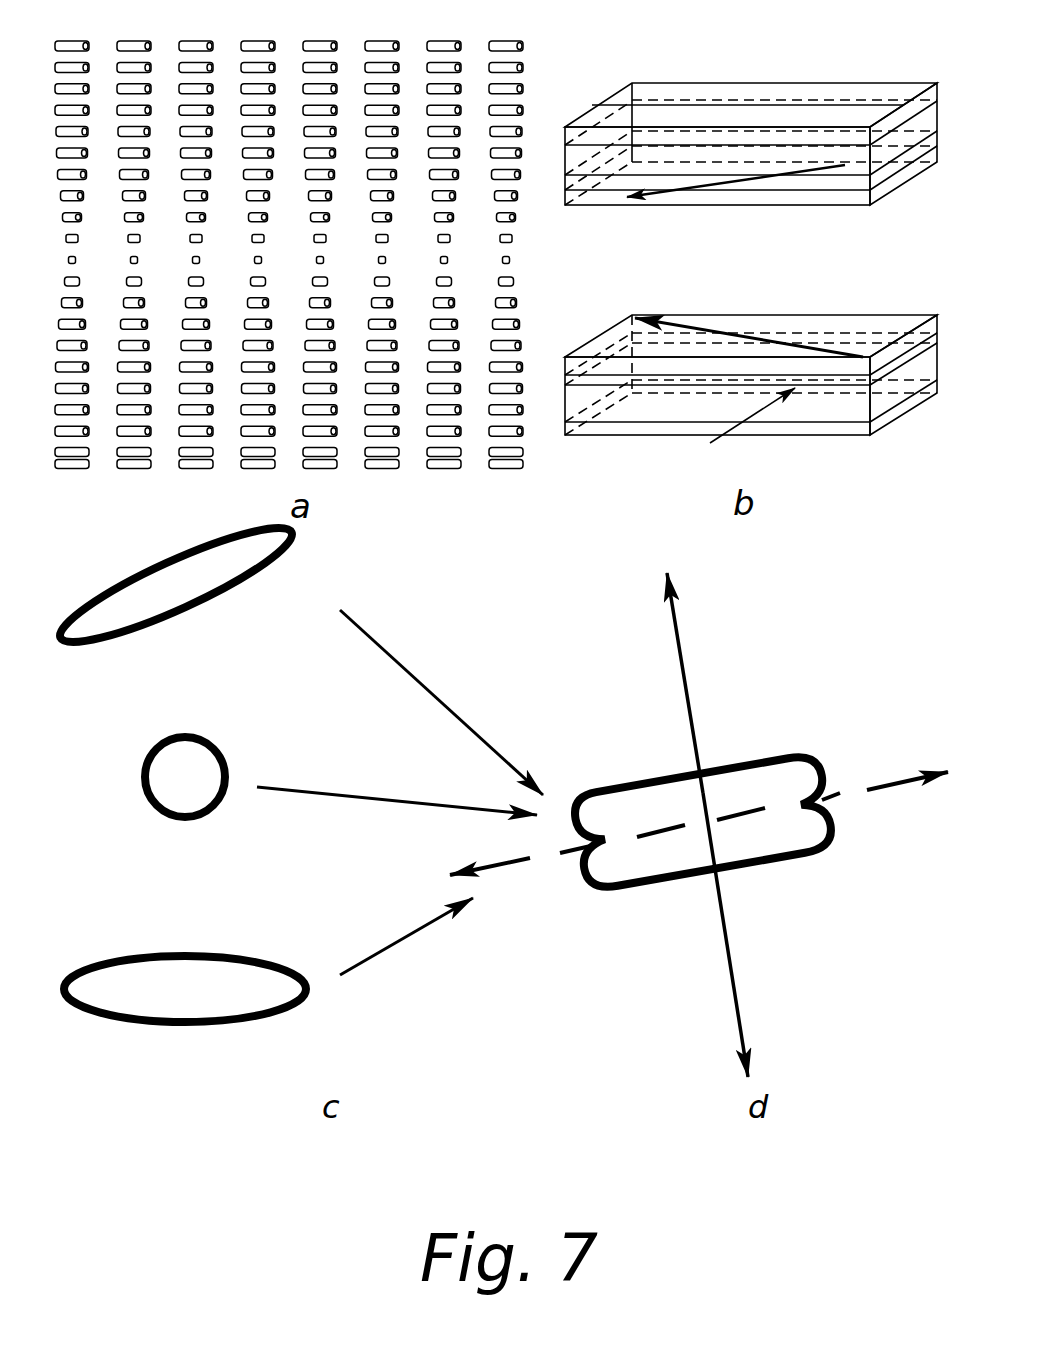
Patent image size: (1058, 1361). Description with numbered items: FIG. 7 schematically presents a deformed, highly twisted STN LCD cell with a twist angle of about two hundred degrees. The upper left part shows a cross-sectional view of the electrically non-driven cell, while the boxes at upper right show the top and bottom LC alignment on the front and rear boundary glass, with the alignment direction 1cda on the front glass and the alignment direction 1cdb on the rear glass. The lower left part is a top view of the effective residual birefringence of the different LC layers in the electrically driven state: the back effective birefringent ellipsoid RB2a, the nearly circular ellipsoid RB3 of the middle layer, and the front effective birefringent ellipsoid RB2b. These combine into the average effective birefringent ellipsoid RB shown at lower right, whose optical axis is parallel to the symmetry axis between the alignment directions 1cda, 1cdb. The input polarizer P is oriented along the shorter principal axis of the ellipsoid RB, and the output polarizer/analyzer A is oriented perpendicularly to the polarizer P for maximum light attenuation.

The alignment direction 1cdb is at (736, 210).
The alignment direction 1cda is at (713, 305).
The output polarizer/analyzer A is at (820, 102).
The input polarizer P is at (744, 732).
The back effective birefringent ellipsoid RB2a is at (296, 652).
The effective birefringent ellipsoid of middle LC layer RB3 is at (341, 763).
The front effective birefringent ellipsoid RB2b is at (267, 992).
The average effective birefringent ellipsoid RB is at (739, 799).